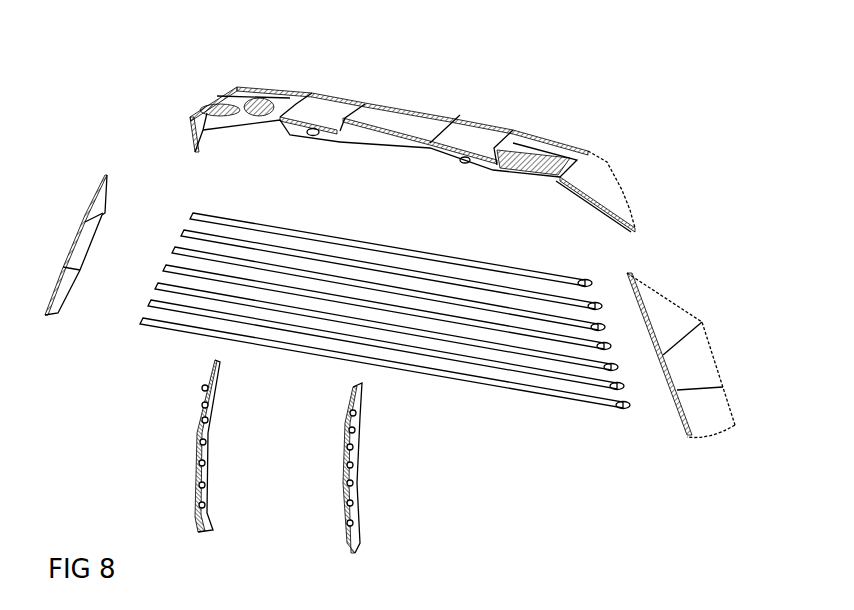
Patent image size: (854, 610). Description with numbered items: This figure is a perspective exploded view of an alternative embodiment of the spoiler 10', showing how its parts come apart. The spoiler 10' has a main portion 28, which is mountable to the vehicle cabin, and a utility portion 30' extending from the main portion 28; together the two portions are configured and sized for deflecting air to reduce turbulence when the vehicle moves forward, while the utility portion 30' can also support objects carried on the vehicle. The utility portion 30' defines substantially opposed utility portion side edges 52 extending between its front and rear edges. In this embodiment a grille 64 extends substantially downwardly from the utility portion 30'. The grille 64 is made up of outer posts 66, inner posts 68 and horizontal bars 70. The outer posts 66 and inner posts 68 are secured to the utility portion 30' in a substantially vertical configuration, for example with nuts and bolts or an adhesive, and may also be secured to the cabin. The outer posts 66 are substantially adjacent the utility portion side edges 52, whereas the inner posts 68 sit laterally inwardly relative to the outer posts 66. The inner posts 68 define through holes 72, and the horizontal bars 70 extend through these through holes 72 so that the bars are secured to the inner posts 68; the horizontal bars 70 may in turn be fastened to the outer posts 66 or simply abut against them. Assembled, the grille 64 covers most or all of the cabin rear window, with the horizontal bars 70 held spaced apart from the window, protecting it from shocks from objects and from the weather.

The spoiler 10' is at (414, 309).
The utility portion 30' is at (387, 159).
The main portion 28 is at (349, 134).
The utility portion side edges 52 is at (187, 122).
The grille 64 is at (595, 437).
The outer posts 66 is at (57, 313).
The inner posts 68 is at (205, 528).
The horizontal bars 70 is at (330, 235).
The through holes 72 is at (357, 430).